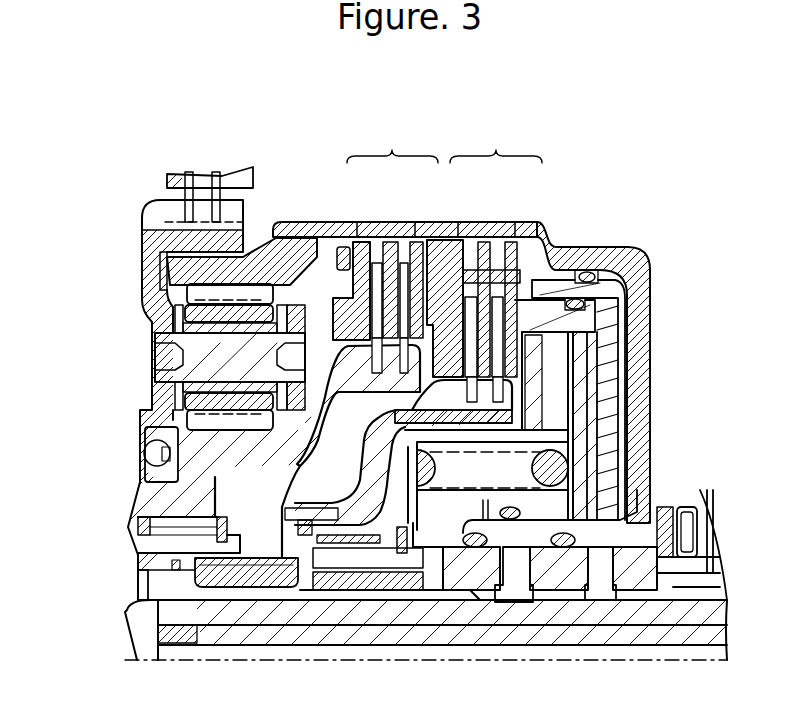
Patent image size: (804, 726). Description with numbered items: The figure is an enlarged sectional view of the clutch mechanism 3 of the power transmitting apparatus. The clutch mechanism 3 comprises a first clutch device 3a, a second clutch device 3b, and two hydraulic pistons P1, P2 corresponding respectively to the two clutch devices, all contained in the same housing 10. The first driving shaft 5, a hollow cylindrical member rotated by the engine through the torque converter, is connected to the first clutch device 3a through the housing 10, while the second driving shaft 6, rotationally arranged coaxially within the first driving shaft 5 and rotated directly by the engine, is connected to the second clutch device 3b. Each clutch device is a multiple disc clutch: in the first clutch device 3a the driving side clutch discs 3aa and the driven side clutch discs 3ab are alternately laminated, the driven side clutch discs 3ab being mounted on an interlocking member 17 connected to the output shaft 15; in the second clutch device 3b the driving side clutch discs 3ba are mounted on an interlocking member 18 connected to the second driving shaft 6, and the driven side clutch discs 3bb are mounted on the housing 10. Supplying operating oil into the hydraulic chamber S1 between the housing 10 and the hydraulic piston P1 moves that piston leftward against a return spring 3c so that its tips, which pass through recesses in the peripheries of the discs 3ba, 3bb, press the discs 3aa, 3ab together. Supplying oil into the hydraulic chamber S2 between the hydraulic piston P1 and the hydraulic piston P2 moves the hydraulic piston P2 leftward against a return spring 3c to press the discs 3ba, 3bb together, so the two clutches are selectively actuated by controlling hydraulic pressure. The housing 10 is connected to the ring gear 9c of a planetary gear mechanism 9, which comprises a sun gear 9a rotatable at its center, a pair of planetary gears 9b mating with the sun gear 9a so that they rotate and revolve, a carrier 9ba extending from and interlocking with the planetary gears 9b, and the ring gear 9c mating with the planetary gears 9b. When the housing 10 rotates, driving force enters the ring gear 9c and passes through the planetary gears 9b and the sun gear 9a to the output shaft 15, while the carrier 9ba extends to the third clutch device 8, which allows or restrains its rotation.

The clutch mechanism 3 is at (578, 212).
The first clutch device 3a is at (361, 312).
The second clutch device 3b is at (504, 318).
The driving side clutch discs 3aa is at (404, 263).
The driven side clutch discs 3ab is at (416, 255).
The driving side clutch discs 3ba is at (497, 297).
The driven side clutch discs 3bb is at (511, 255).
The return spring 3c is at (558, 458).
The first driving shaft 5 is at (707, 580).
The second driving shaft 6 is at (720, 618).
The third clutch device 8 is at (156, 180).
The planetary gear mechanism 9 is at (182, 334).
The sun gear 9a is at (200, 366).
The planetary gears 9b is at (185, 313).
The carrier 9ba is at (142, 250).
The ring gear 9c is at (175, 270).
The housing 10 is at (633, 258).
The output shaft 15 is at (138, 628).
The interlocking member 17 is at (140, 500).
The interlocking member 18 is at (262, 570).
The hydraulic piston P1 is at (620, 297).
The hydraulic piston P2 is at (580, 322).
The hydraulic chamber S1 is at (623, 352).
The hydraulic chamber S2 is at (598, 375).